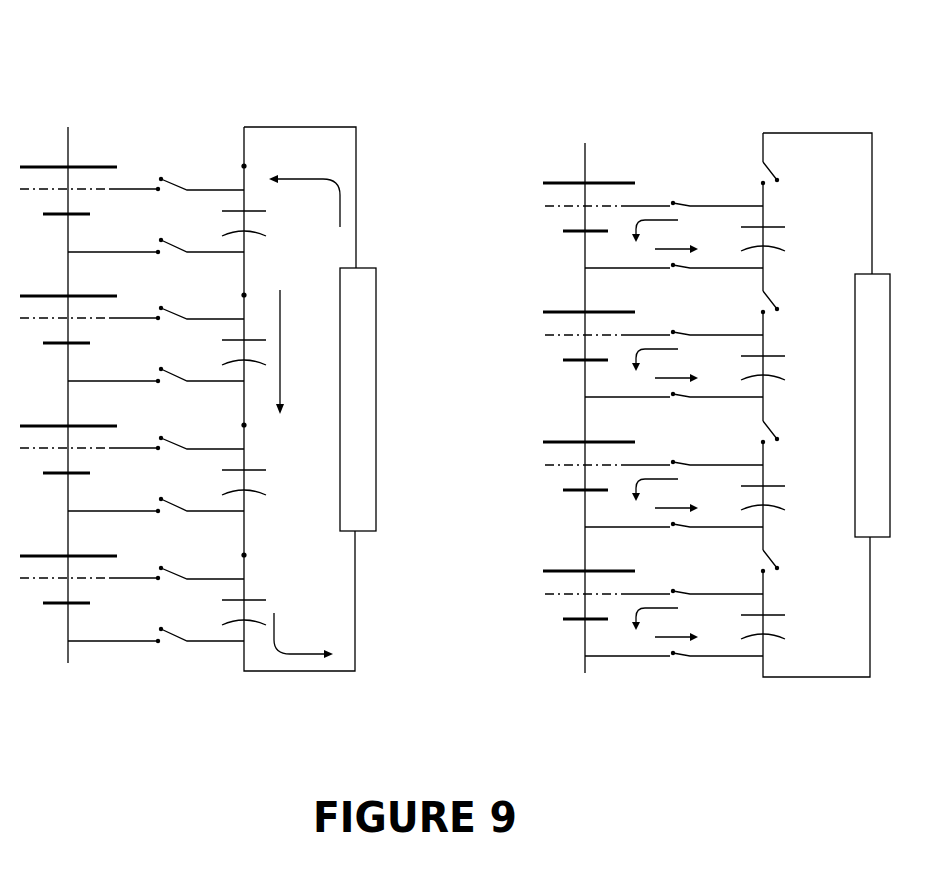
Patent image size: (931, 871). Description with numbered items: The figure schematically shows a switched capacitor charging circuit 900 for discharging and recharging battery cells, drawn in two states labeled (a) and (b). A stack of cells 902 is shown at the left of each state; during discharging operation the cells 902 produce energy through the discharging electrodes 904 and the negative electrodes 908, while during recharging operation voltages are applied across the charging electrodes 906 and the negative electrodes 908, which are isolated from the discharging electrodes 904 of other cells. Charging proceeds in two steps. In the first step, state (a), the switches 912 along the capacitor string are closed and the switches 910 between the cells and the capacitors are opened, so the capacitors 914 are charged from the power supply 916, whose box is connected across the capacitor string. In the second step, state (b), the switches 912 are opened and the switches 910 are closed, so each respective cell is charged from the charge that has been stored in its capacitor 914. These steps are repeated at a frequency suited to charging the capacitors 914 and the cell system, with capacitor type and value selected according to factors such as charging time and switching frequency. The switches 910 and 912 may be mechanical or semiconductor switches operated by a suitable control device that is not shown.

The switched capacitor charging circuit 900 is at (223, 41).
The cells 902 is at (578, 111).
The discharging electrodes 904 is at (548, 181).
The charging electrodes 906 is at (545, 205).
The negative electrodes 908 is at (566, 233).
The switches 910 is at (166, 177).
The switches 912 is at (247, 163).
The capacitors 914 is at (802, 226).
The power supply 916 is at (366, 533).